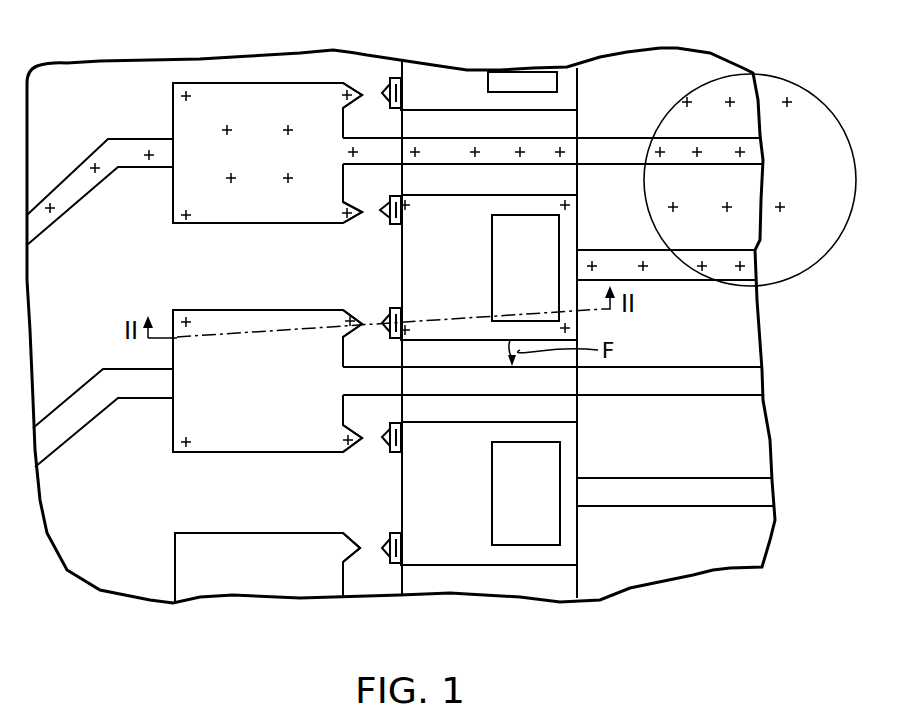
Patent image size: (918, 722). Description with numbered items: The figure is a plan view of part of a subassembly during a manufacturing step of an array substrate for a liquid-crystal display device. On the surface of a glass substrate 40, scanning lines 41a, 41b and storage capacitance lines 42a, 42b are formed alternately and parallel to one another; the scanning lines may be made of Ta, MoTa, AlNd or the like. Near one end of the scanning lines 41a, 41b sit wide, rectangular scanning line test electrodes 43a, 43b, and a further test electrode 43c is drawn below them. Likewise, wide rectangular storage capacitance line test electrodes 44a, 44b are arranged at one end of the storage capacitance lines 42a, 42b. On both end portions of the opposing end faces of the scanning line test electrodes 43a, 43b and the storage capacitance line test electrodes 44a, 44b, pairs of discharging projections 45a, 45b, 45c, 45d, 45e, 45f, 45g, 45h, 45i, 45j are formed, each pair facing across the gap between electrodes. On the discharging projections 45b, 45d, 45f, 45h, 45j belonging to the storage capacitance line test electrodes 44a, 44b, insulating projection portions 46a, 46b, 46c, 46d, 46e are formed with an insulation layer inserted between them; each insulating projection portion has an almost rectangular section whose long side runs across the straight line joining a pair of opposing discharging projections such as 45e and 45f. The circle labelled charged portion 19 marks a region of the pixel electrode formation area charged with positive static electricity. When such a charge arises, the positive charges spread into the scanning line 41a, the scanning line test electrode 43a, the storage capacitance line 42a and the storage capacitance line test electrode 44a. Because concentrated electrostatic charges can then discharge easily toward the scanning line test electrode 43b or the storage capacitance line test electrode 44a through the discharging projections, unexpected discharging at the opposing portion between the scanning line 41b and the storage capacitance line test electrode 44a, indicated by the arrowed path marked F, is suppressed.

The charged portion 19 is at (717, 98).
The glass substrate 40 is at (697, 560).
The scanning line 41a is at (613, 135).
The scanning line 41b is at (752, 377).
The storage capacitance line 42a is at (748, 270).
The storage capacitance line 42b is at (762, 488).
The scanning line test electrode 43a is at (234, 222).
The scanning line test electrode 43b is at (254, 437).
The third pad portion 43c is at (190, 563).
The storage capacitance line test electrode 44a is at (578, 226).
The storage capacitance line test electrode 44b is at (580, 448).
The discharging projection 45a is at (356, 88).
The discharging projection 45b is at (384, 96).
The discharging projection 45c is at (357, 223).
The discharging projection 45d is at (383, 205).
The discharging projection 45e is at (343, 322).
The discharging projection 45f is at (383, 318).
The discharging projection 45g is at (355, 445).
The discharging projection 45h is at (392, 455).
The discharging projection 45i is at (345, 546).
The discharging projection 45j is at (383, 555).
The insulating projection portion 46a is at (394, 97).
The insulating projection portion 46b is at (401, 212).
The insulating projection portion 46c is at (401, 320).
The insulating projection portion 46d is at (401, 437).
The insulating projection portion 46e is at (401, 545).